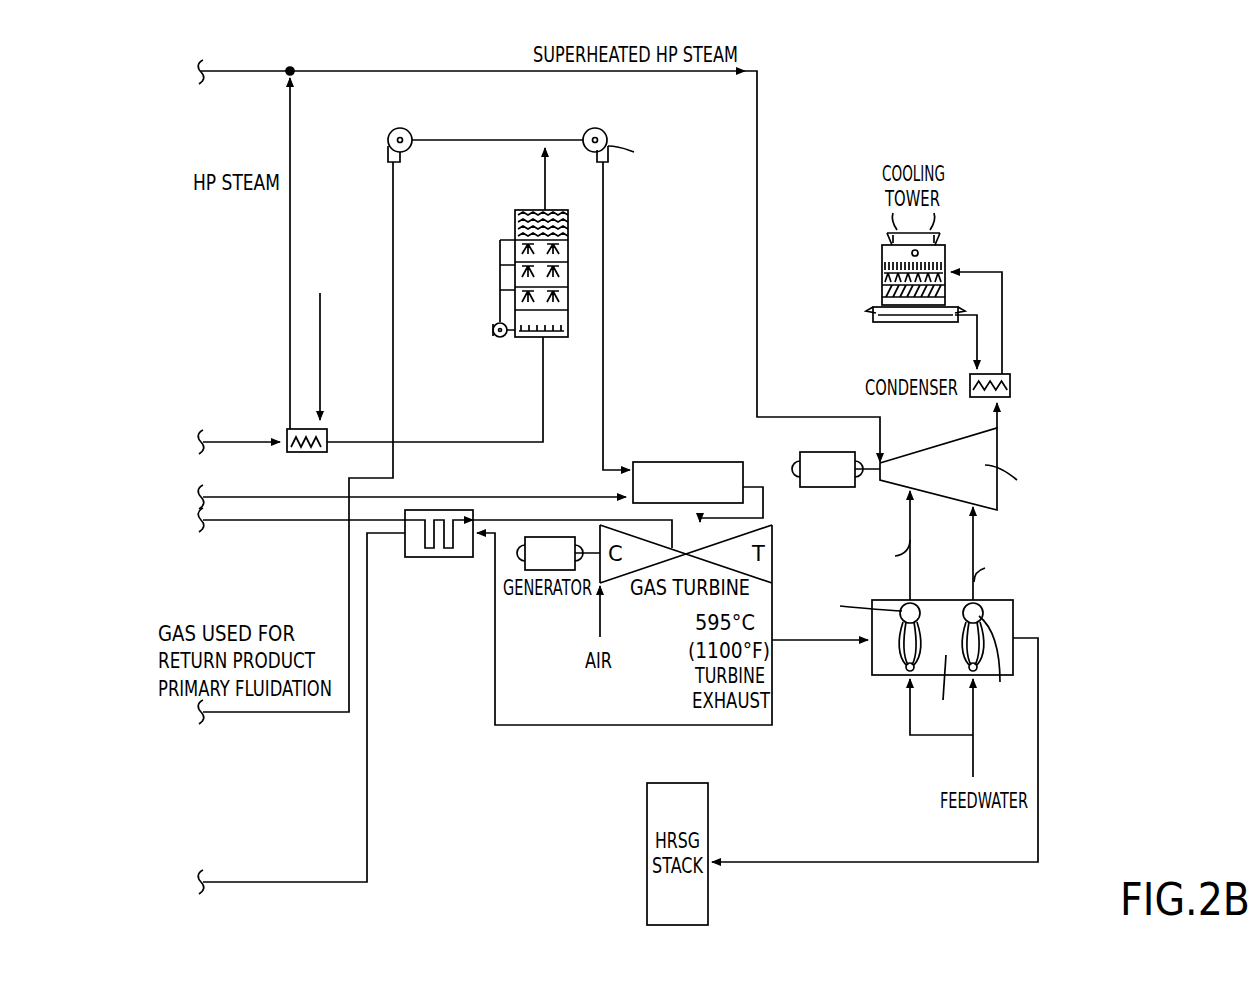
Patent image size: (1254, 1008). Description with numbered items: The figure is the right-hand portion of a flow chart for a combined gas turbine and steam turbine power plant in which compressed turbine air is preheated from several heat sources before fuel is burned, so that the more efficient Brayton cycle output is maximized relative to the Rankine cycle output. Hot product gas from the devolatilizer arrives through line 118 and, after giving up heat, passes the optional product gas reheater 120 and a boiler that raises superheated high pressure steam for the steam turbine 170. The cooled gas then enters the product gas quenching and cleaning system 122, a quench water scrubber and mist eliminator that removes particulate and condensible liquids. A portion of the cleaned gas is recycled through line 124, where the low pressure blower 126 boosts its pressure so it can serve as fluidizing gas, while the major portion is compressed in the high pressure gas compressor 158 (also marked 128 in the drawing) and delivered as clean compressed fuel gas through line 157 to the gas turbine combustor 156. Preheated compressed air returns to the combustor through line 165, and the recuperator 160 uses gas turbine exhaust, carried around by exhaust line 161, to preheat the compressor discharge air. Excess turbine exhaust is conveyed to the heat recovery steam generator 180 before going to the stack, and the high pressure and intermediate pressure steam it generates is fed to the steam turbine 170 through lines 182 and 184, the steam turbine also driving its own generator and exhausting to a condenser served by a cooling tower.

The product gas line 118 is at (480, 441).
The product gas reheater 120 is at (307, 429).
The product gas quenching and cleaning system 122 is at (515, 229).
The recycle line 124 is at (509, 142).
The low pressure blower 126 is at (388, 138).
The gas compressor 128 is at (574, 136).
The gas turbine combustor 156 is at (744, 461).
The fuel gas line 157 is at (606, 300).
The high pressure gas compressor 158 is at (634, 152).
The recuperator 160 is at (403, 549).
The turbine exhaust line 161 is at (567, 727).
The preheated air line 165 is at (410, 496).
The steam turbine 170 is at (946, 447).
The heat recovery steam generator 180 is at (890, 676).
The high pressure steam line 182 is at (911, 522).
The intermediate pressure steam line 184 is at (973, 532).